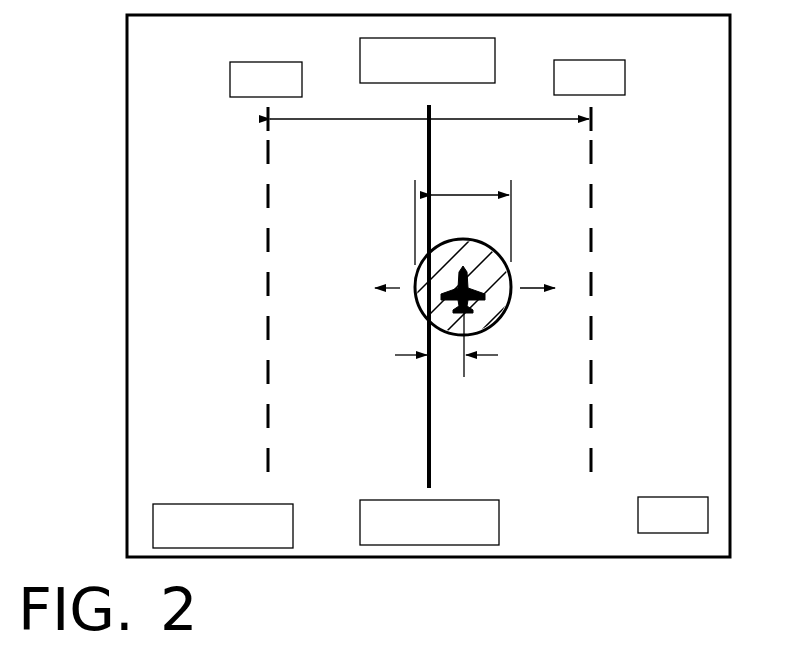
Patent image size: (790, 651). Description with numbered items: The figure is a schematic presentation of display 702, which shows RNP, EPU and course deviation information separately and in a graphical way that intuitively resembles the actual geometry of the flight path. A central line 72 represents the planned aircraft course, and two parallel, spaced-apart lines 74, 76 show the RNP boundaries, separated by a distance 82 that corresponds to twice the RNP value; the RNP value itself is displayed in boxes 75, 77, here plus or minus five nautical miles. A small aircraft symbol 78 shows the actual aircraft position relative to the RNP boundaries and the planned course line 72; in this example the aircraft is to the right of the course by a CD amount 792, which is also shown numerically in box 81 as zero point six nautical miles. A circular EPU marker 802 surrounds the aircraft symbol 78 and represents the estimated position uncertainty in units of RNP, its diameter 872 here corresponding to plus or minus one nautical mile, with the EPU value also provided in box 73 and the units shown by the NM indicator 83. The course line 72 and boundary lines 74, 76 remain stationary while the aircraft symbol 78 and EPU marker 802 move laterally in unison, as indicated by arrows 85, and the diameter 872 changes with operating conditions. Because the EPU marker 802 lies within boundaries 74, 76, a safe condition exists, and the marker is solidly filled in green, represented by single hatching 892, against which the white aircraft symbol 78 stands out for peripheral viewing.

The display 702 is at (578, 583).
The central line 72 is at (428, 429).
The EPU box 73 is at (238, 503).
The RNP boundary line 74 is at (265, 433).
The RNP box 75 is at (361, 81).
The RNP boundary line 76 is at (596, 428).
The RNP box 77 is at (231, 91).
The aircraft symbol 78 is at (456, 283).
The CD box 81 is at (462, 500).
The separation distance 82 is at (385, 118).
The units indicator 83 is at (639, 516).
The arrows 85 is at (385, 285).
The CD amount 792 is at (445, 357).
The EPU marker 802 is at (421, 311).
The EPU diameter 872 is at (468, 193).
The hatching 892 is at (497, 318).